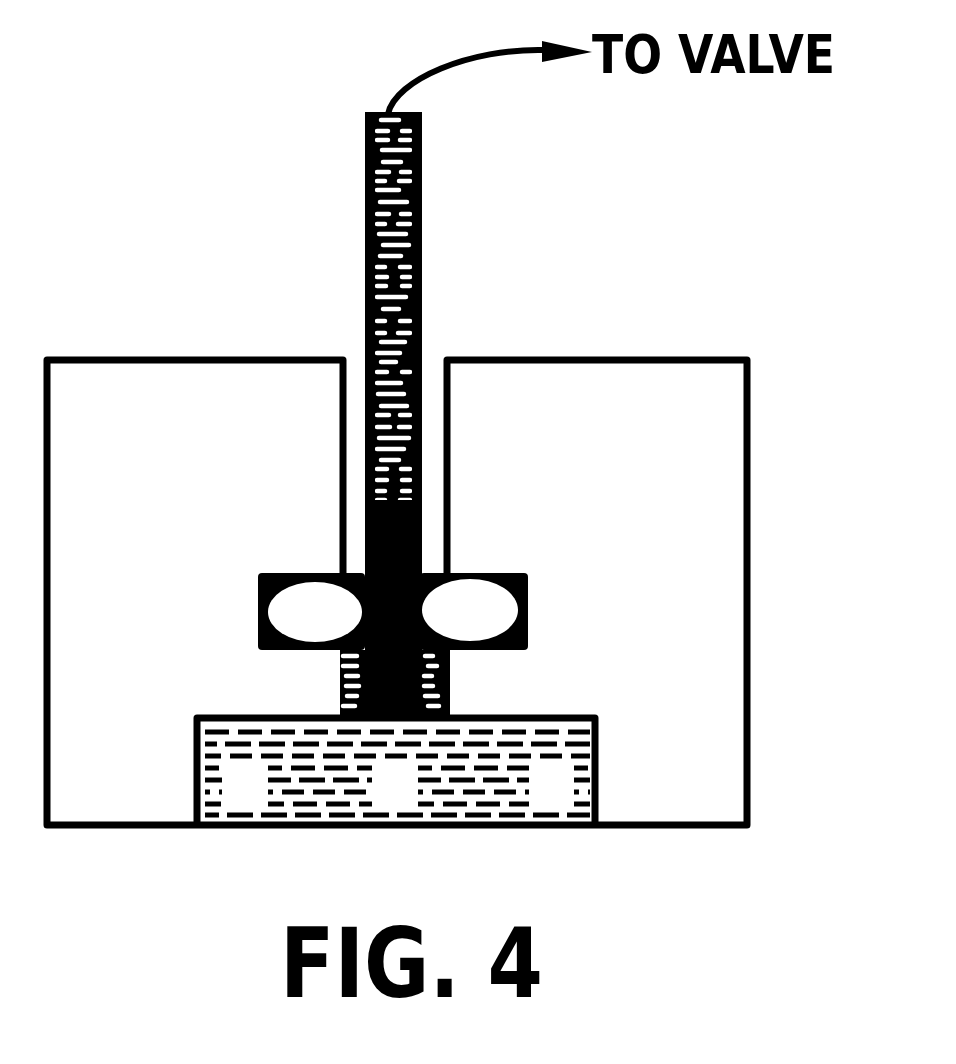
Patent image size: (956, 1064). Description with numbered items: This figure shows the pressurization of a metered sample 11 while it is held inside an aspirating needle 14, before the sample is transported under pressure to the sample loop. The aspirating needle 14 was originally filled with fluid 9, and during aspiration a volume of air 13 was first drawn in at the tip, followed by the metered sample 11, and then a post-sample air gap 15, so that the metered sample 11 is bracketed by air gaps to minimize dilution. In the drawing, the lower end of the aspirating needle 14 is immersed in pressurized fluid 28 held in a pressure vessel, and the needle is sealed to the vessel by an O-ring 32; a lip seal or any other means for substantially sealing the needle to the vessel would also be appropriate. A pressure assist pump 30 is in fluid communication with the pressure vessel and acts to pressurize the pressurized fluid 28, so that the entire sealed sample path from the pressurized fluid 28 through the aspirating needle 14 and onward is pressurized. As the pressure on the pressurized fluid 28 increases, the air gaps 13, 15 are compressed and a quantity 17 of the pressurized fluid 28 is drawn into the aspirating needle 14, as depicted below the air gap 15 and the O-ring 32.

The fluid 9 is at (366, 218).
The aspirating needle 14 is at (422, 248).
The volume of air 13 is at (420, 497).
The metered sample 11 is at (420, 558).
The O-ring 32 is at (310, 603).
The quantity of pressurized fluid 17 is at (335, 673).
The post-sample air gap 15 is at (452, 650).
The pressure assist pump 30 is at (752, 632).
The pressurized fluid 28 is at (290, 800).